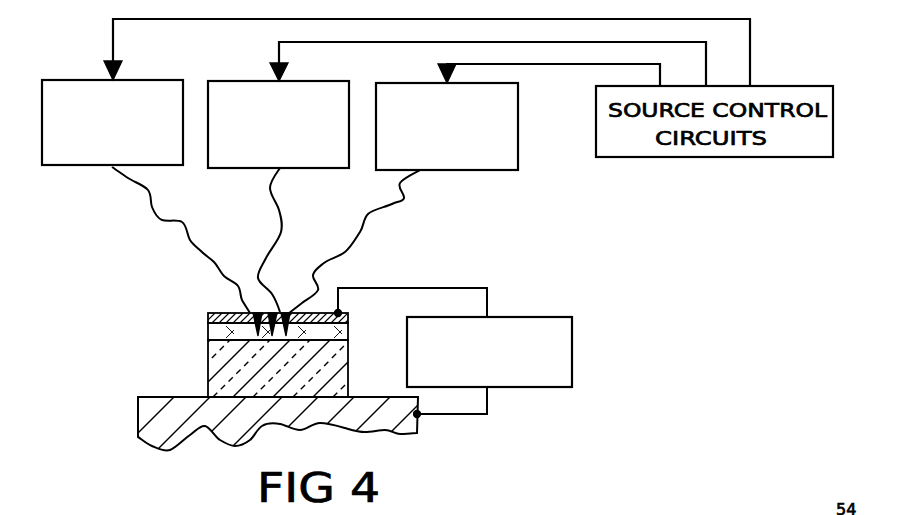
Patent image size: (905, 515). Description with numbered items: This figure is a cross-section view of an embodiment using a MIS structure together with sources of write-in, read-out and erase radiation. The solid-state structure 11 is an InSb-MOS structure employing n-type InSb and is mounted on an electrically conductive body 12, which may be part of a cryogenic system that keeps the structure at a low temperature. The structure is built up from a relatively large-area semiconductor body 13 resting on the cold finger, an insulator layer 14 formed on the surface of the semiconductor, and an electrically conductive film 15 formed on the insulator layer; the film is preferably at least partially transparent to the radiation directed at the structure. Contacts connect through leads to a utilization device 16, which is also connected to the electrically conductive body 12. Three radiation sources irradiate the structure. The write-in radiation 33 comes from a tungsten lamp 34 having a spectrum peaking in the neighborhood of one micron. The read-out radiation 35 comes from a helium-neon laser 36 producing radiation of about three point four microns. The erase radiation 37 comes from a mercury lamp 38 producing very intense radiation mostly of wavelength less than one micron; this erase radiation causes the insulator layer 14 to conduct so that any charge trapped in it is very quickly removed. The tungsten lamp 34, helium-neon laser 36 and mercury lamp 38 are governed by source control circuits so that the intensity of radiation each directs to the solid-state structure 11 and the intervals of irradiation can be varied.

The solid-state structure 11 is at (271, 342).
The electrically conductive body 12 is at (138, 420).
The semiconductor body 13 is at (352, 341).
The insulator layer 14 is at (352, 328).
The electrically conductive film 15 is at (348, 315).
The utilization device 16 is at (562, 315).
The write-in radiation 33 is at (150, 198).
The tungsten lamp 34 is at (138, 78).
The read-out radiation 35 is at (278, 213).
The helium-neon laser 36 is at (307, 80).
The erase radiation 37 is at (400, 200).
The mercury lamp 38 is at (410, 82).